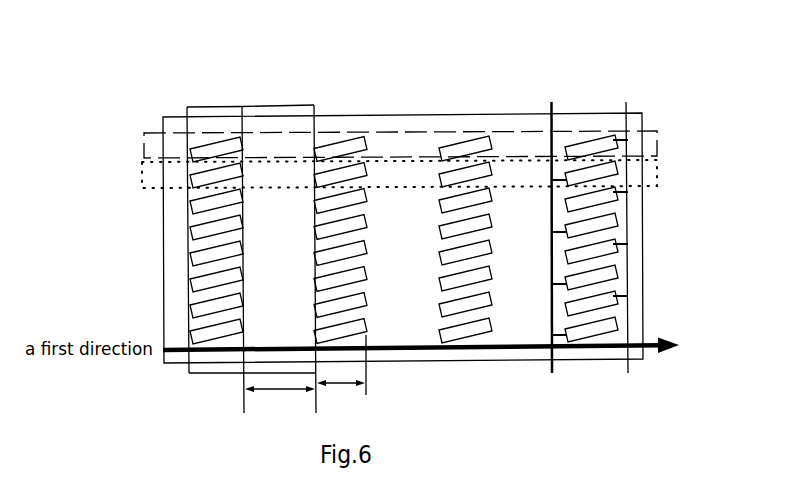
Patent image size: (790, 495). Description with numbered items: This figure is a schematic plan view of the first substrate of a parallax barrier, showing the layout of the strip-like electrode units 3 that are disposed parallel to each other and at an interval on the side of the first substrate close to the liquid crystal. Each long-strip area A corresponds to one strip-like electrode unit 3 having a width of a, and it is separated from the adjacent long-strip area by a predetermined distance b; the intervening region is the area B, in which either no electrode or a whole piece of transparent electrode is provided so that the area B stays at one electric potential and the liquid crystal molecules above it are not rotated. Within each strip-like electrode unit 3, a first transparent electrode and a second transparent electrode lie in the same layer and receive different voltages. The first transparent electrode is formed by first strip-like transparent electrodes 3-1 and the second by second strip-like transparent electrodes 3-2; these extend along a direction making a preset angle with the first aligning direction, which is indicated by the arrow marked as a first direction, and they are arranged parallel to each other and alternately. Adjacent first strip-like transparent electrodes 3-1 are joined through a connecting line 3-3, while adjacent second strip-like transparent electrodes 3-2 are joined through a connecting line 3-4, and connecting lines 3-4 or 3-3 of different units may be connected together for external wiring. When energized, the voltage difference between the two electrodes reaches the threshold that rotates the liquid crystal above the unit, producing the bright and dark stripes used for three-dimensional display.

The strip-like electrode unit 3 is at (198, 118).
The first strip-like transparent electrode 3-1 is at (200, 153).
The second strip-like transparent electrode 3-2 is at (187, 182).
The connecting line 3-3 is at (626, 102).
The connecting line 3-4 is at (551, 102).
The long-strip area A is at (210, 100).
The area B is at (275, 100).
The width a is at (341, 394).
The predetermined distance b is at (280, 402).